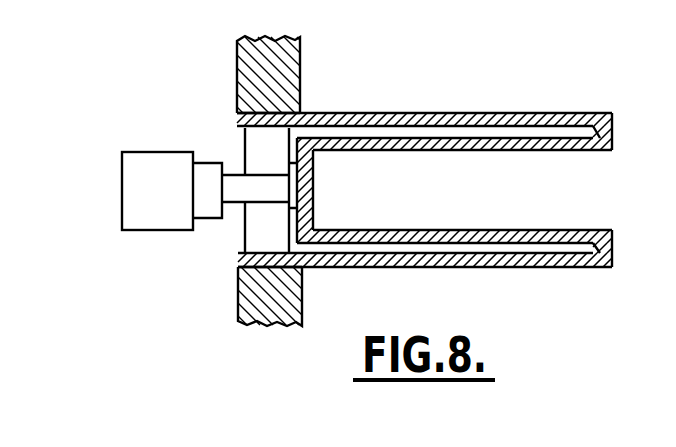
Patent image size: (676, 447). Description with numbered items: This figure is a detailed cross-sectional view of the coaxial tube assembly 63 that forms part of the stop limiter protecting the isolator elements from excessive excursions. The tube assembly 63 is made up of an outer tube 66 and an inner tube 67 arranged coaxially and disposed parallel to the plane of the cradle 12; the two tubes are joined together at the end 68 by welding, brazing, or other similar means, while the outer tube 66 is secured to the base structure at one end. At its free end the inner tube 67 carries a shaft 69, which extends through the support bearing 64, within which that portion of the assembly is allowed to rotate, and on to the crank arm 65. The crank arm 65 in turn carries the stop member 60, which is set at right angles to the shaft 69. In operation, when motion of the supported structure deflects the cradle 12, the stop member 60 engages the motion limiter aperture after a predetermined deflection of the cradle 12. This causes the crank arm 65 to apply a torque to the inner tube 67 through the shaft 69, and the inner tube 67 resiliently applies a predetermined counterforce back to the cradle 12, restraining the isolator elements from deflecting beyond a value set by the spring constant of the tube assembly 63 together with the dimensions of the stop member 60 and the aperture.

The cradle 12 is at (238, 80).
The stop member 60 is at (122, 195).
The coaxial tube assembly 63 is at (567, 188).
The support bearing 64 is at (243, 246).
The crank arm 65 is at (205, 163).
The outer tube 66 is at (398, 112).
The inner tube 67 is at (460, 152).
The end 68 is at (612, 118).
The shaft 69 is at (237, 205).